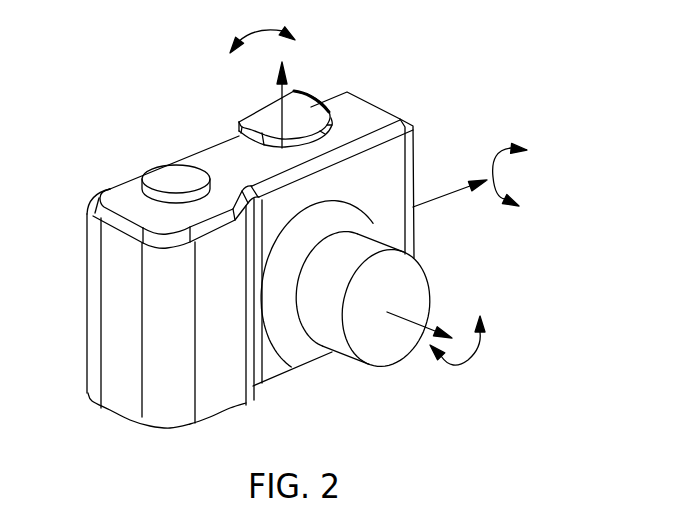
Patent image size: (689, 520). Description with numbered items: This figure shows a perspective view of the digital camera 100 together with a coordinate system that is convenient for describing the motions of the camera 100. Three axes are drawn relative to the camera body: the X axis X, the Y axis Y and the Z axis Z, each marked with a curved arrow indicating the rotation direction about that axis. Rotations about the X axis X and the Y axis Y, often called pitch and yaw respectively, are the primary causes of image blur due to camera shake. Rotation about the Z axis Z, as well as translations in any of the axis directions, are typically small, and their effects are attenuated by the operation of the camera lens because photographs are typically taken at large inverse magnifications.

The digital camera 100 is at (156, 138).
The X axis X is at (470, 167).
The Y axis Y is at (244, 87).
The Z axis Z is at (444, 346).